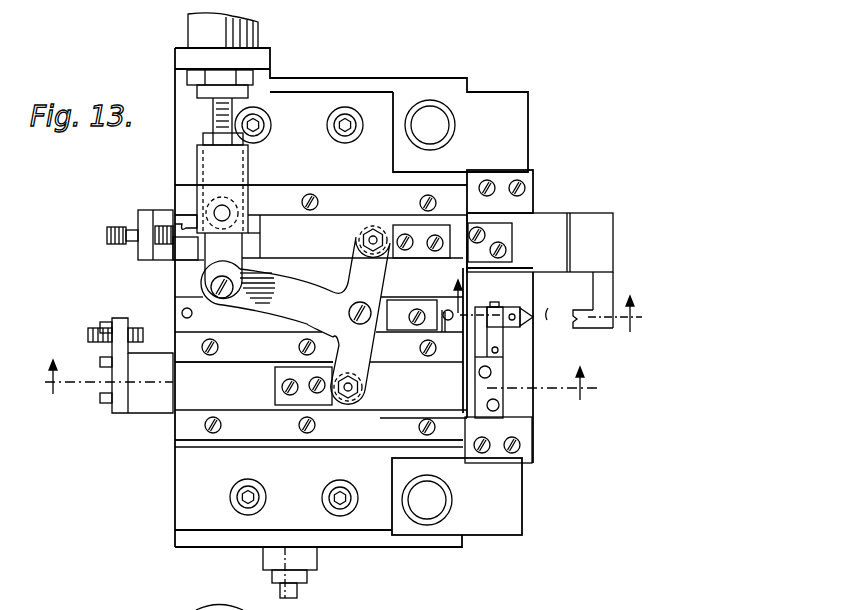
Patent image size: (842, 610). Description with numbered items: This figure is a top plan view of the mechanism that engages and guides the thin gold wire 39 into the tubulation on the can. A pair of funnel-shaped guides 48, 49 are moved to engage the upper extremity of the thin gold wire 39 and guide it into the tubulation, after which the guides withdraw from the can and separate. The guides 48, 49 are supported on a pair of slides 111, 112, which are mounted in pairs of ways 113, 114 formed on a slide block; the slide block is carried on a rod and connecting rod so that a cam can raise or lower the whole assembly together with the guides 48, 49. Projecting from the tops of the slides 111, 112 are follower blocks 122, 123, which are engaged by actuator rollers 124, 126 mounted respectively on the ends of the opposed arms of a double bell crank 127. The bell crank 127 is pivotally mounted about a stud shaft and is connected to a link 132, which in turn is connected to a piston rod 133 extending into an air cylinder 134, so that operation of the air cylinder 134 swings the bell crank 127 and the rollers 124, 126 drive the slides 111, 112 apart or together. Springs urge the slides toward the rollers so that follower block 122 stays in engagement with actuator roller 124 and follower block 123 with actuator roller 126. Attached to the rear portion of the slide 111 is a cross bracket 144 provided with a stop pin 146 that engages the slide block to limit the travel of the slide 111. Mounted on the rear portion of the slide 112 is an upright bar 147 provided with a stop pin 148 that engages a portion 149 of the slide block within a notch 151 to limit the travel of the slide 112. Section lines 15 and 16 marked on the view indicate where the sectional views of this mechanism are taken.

The air cylinder 134 is at (268, 12).
The piston rod 133 is at (217, 111).
The link 132 is at (228, 247).
The double bell crank 127 is at (263, 281).
The actuator roller 126 is at (360, 256).
The actuator roller 124 is at (365, 368).
The follower block 123 is at (415, 227).
The follower block 122 is at (280, 401).
The ways 114 is at (327, 197).
The ways 113 is at (240, 350).
The slide 112 is at (535, 228).
The slide 111 is at (433, 398).
The funnel-shaped guide 49 is at (596, 331).
The funnel-shaped guide 48 is at (518, 328).
The thin gold wire 39 is at (559, 300).
The section line 16- 16 is at (549, 300).
The section line 15- 15 is at (322, 382).
The notch 151 is at (186, 226).
The portion of the slide block 149 is at (186, 256).
The stop pin 148 is at (158, 234).
The upright bar 147 is at (147, 237).
The stop pin 146 is at (138, 322).
The cross bracket 144 is at (118, 408).